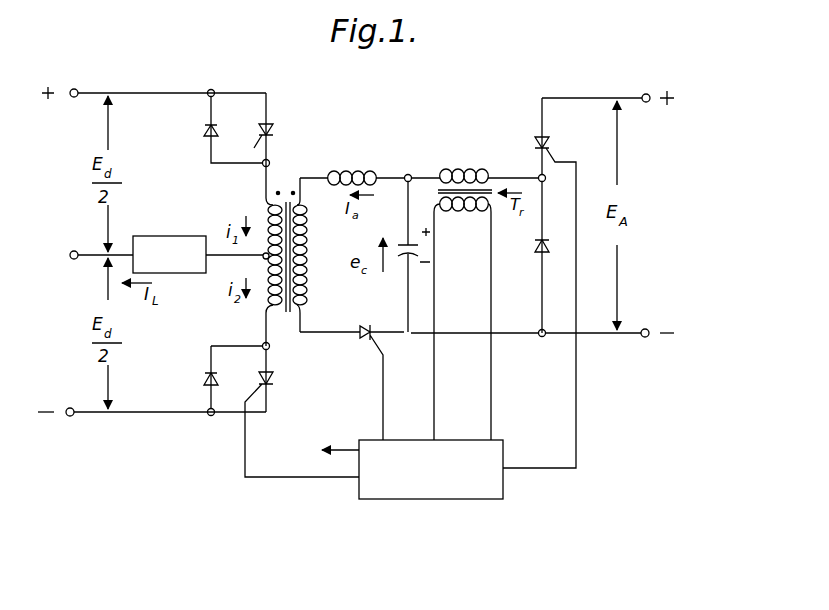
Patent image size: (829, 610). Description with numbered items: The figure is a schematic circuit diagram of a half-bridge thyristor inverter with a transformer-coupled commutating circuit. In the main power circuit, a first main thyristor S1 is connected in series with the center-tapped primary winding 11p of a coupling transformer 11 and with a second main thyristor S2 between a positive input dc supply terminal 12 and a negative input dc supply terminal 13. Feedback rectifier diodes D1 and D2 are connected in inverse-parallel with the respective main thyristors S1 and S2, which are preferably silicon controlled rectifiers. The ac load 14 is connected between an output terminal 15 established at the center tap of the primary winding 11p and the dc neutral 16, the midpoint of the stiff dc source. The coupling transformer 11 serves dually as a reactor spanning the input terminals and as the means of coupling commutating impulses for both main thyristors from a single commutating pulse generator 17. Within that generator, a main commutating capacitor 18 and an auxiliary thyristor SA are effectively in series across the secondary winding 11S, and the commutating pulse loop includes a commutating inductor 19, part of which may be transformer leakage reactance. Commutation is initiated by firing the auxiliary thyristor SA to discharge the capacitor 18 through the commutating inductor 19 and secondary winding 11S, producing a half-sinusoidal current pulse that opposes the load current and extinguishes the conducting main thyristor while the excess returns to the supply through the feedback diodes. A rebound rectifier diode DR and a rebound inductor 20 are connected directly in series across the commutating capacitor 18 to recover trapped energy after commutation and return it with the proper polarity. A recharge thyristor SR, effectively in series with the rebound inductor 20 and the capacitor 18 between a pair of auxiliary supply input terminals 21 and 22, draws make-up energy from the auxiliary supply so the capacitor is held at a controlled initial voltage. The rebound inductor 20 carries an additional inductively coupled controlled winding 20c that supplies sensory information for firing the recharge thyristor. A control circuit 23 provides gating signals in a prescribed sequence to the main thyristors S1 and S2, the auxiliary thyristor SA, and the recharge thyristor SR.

The coupling transformer 11 is at (287, 239).
The primary winding 11p is at (268, 212).
The secondary winding 11S is at (308, 240).
The positive input dc supply terminal 12 is at (76, 89).
The negative input dc supply terminal 13 is at (68, 418).
The ac load 14 is at (179, 236).
The output terminal 15 is at (262, 259).
The dc neutral 16 is at (71, 251).
The commutating pulse generator 17 is at (407, 172).
The main commutating capacitor 18 is at (400, 266).
The commutating inductor 19 is at (349, 170).
The rebound inductor 20 is at (466, 168).
The controlled winding 20c is at (464, 216).
The auxiliary supply input terminal 21 is at (647, 93).
The auxiliary supply input terminal 22 is at (647, 338).
The control circuit 23 is at (403, 439).
The feedback rectifier diode D1 is at (219, 127).
The feedback rectifier diode D2 is at (197, 381).
The first main thyristor S1 is at (277, 130).
The second main thyristor S2 is at (302, 413).
The auxiliary thyristor SA is at (352, 382).
The recharge thyristor SR is at (541, 283).
The rebound rectifier diode DR is at (553, 259).